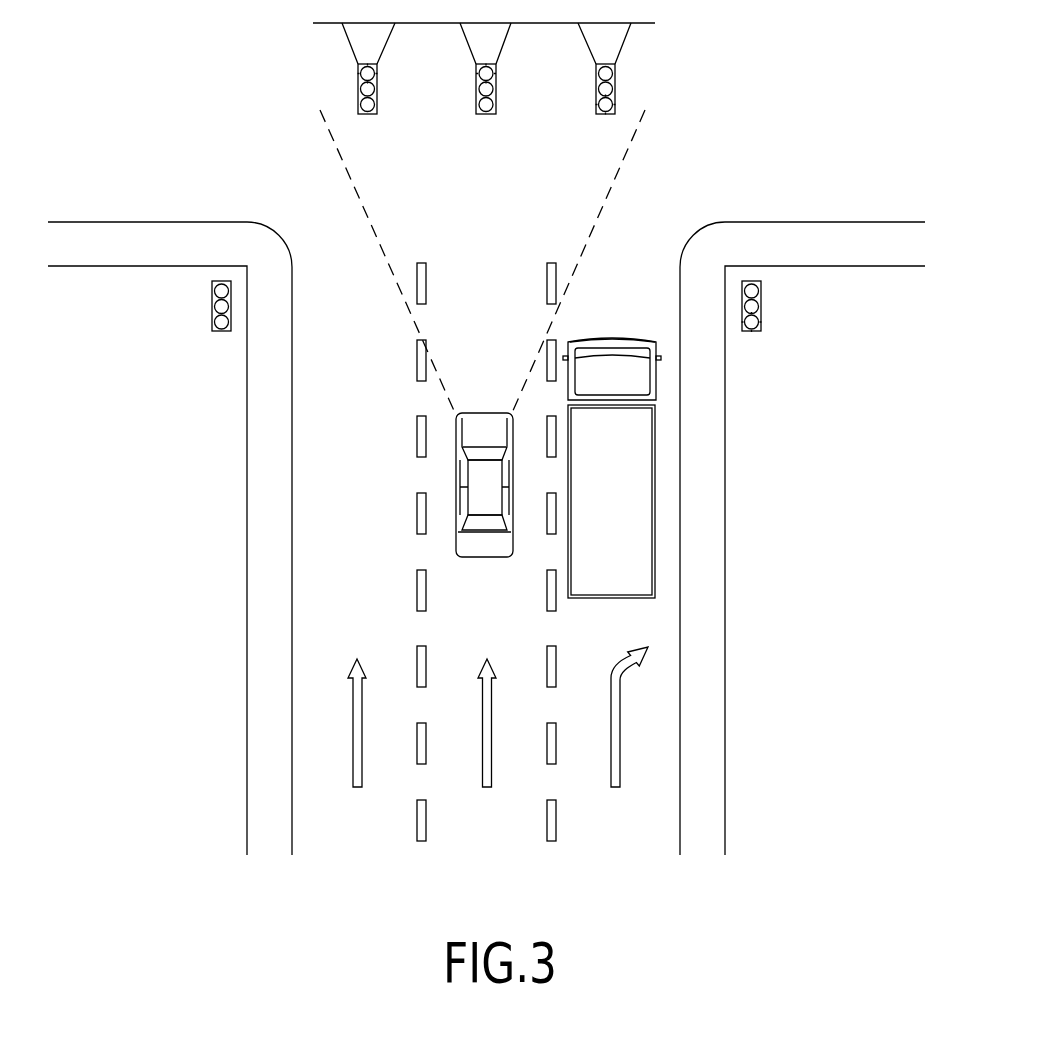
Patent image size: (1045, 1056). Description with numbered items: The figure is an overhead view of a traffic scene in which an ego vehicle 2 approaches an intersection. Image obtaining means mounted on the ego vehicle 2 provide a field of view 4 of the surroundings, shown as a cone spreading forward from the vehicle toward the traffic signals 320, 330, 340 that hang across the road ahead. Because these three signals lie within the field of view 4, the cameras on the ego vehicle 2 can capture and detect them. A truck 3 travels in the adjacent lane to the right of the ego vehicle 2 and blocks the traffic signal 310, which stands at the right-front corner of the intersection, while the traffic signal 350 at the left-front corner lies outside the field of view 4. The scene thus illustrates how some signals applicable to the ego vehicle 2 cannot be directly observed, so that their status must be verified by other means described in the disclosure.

The ego vehicle 2 is at (484, 547).
The truck 3 is at (612, 585).
The field of view 4 is at (598, 218).
The traffic signal 310 is at (752, 331).
The traffic signal 320 is at (606, 115).
The traffic signal 330 is at (486, 115).
The traffic signal 340 is at (368, 115).
The traffic signal 350 is at (221, 331).